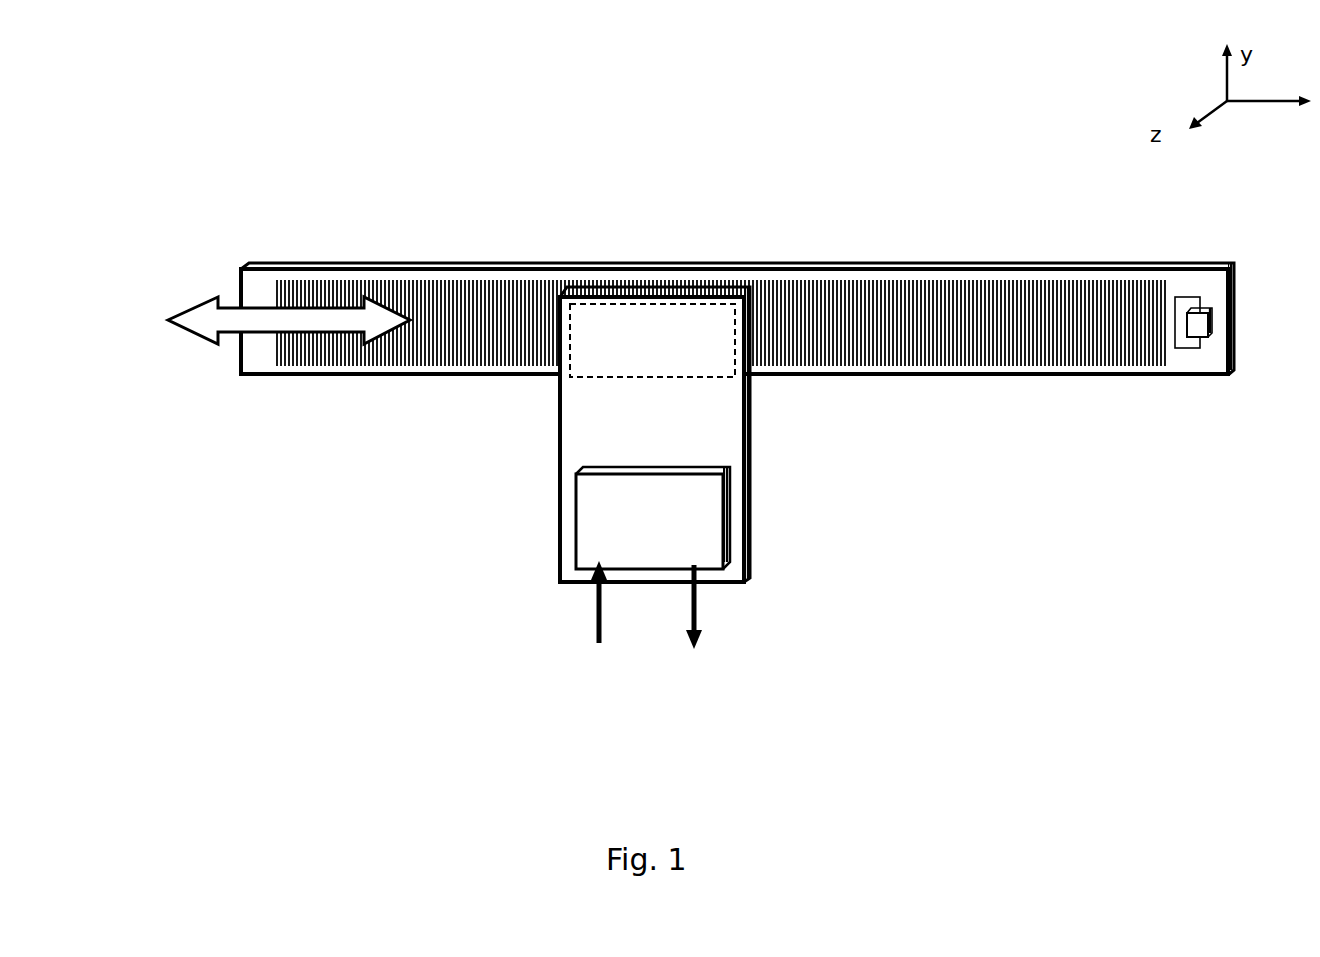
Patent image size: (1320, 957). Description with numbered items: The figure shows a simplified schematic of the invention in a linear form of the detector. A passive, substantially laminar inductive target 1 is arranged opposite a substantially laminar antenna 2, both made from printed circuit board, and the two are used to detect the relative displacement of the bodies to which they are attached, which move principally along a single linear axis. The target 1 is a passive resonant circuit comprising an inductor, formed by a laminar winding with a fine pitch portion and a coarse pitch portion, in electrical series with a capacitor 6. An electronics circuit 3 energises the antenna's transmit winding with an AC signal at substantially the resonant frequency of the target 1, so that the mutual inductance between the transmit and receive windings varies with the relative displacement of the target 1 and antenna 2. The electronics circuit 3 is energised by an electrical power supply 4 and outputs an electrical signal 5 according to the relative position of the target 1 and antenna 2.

The inductive target 1 is at (264, 355).
The antenna 2 is at (587, 337).
The electronics circuit 3 is at (690, 522).
The electrical power supply 4 is at (608, 613).
The electrical signal 5 is at (700, 620).
The capacitor 6 is at (1196, 323).